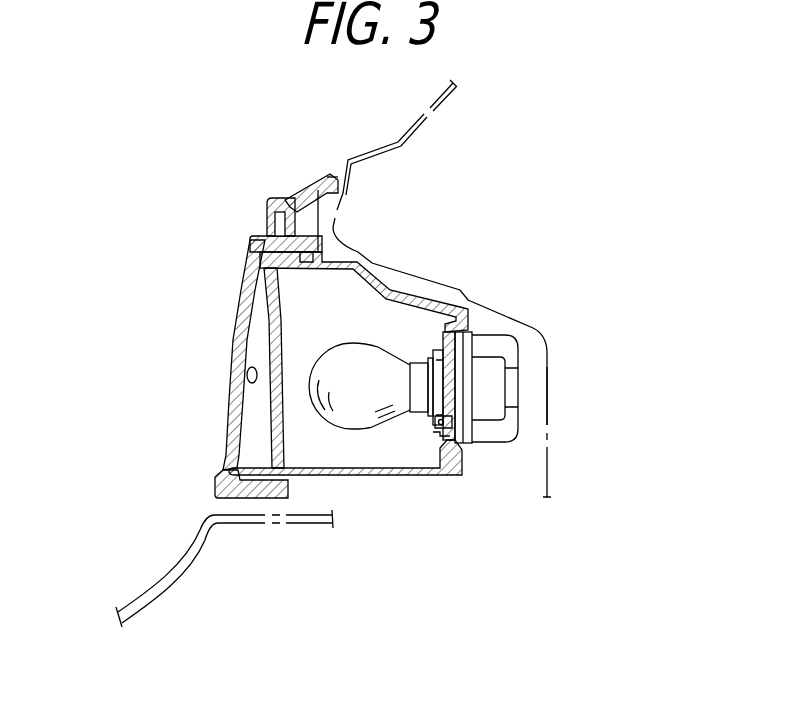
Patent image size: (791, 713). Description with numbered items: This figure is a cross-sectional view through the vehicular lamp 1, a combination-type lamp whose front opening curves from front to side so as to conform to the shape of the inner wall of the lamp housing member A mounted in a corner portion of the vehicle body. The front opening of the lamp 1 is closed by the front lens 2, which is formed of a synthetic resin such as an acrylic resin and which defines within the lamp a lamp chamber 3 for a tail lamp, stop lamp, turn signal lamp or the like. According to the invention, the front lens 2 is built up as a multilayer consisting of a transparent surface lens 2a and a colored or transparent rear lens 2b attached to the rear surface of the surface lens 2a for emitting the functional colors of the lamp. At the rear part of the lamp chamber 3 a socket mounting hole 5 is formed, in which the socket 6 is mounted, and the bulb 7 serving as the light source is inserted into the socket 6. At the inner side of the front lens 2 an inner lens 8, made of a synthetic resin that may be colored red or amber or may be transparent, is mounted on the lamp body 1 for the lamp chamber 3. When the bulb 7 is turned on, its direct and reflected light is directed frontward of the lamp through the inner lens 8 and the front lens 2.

The vehicular lamp 1 is at (458, 291).
The front lens 2 is at (222, 336).
The surface lens 2a is at (240, 301).
The rear lens 2b is at (216, 378).
The lamp chamber 3 is at (303, 305).
The socket mounting hole 5 is at (442, 428).
The socket 6 is at (498, 435).
The bulb 7 is at (383, 343).
The inner lens 8 is at (267, 427).
The lamp housing member A is at (538, 460).